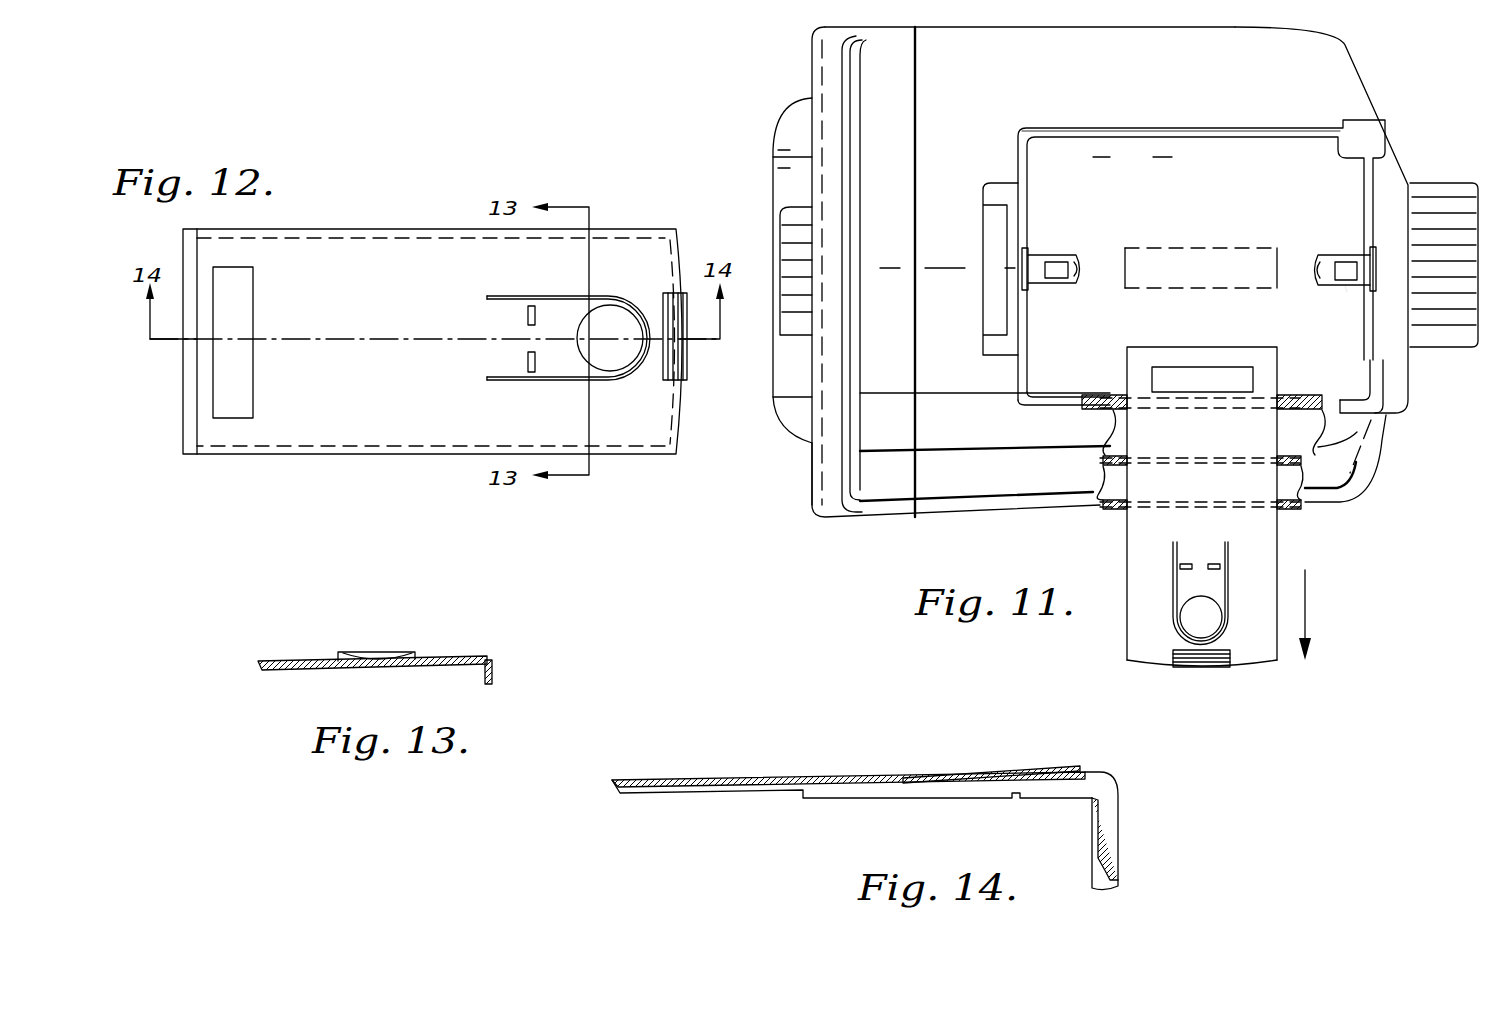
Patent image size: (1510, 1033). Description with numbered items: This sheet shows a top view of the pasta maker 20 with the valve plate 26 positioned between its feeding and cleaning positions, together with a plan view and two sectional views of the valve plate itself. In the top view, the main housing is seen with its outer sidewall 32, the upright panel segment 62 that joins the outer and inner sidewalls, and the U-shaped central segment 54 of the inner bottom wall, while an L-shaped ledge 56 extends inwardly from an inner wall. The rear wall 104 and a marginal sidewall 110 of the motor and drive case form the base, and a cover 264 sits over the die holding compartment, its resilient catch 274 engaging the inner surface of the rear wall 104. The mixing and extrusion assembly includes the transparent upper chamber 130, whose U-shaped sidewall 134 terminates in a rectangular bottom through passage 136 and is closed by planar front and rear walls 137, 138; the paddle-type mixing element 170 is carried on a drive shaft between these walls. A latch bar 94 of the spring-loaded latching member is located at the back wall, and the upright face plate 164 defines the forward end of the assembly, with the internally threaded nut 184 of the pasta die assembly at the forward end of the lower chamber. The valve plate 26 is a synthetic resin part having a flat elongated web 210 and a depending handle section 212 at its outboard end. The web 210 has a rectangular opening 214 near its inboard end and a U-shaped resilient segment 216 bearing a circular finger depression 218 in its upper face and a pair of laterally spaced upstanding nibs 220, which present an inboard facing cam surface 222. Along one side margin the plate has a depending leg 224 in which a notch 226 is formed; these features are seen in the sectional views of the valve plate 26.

In FIG. 11, the pasta maker 20 is at (1396, 448).
In FIG. 11, the valve plate 26 is at (1289, 434).
In FIG. 12, the valve plate 26 is at (435, 320).
In FIG. 13, the valve plate 26 is at (410, 663).
In FIG. 14, the valve plate 26 is at (907, 789).
In FIG. 11, the sidewall 32 is at (1237, 30).
In FIG. 11, the central segment 54 is at (1110, 527).
In FIG. 11, the L-shaped ledge 56 is at (1288, 130).
In FIG. 11, the upright panel segment 62 is at (1371, 83).
In FIG. 11, the latch bar 94 is at (998, 250).
In FIG. 11, the rear wall 104 is at (812, 465).
In FIG. 11, the marginal sidewall 110 is at (897, 517).
In FIG. 11, the upper chamber 130 is at (1072, 158).
In FIG. 11, the sidewall 134 is at (1132, 158).
In FIG. 11, the bottom through passage 136 is at (1172, 265).
In FIG. 11, the front wall 137 is at (1368, 229).
In FIG. 11, the rear wall 138 is at (1027, 232).
In FIG. 11, the face plate 164 is at (1407, 152).
In FIG. 11, the mixing element 170 is at (1344, 296).
In FIG. 11, the nut 184 is at (1438, 325).
In FIG. 12, the web 210 is at (353, 432).
In FIG. 13, the web 210 is at (325, 665).
In FIG. 14, the web 210 is at (732, 778).
In FIG. 14, the handle section 212 is at (1120, 868).
In FIG. 11, the rectangular opening 214 is at (1192, 240).
In FIG. 12, the rectangular opening 214 is at (240, 322).
In FIG. 14, the rectangular opening 214 is at (670, 784).
In FIG. 11, the U-shaped resilient segment 216 is at (1233, 528).
In FIG. 12, the U-shaped resilient segment 216 is at (567, 317).
In FIG. 13, the U-shaped resilient segment 216 is at (372, 654).
In FIG. 11, the circular finger depression 218 is at (1190, 630).
In FIG. 12, the circular finger depression 218 is at (615, 350).
In FIG. 11, the nibs 220 is at (1214, 562).
In FIG. 12, the nibs 220 is at (528, 360).
In FIG. 14, the cam surface 222 is at (995, 768).
In FIG. 13, the depending leg 224 is at (493, 670).
In FIG. 14, the depending leg 224 is at (847, 794).
In FIG. 14, the notch 226 is at (1015, 799).
In FIG. 11, the cover 264 is at (768, 102).
In FIG. 11, the catch 274 is at (800, 273).